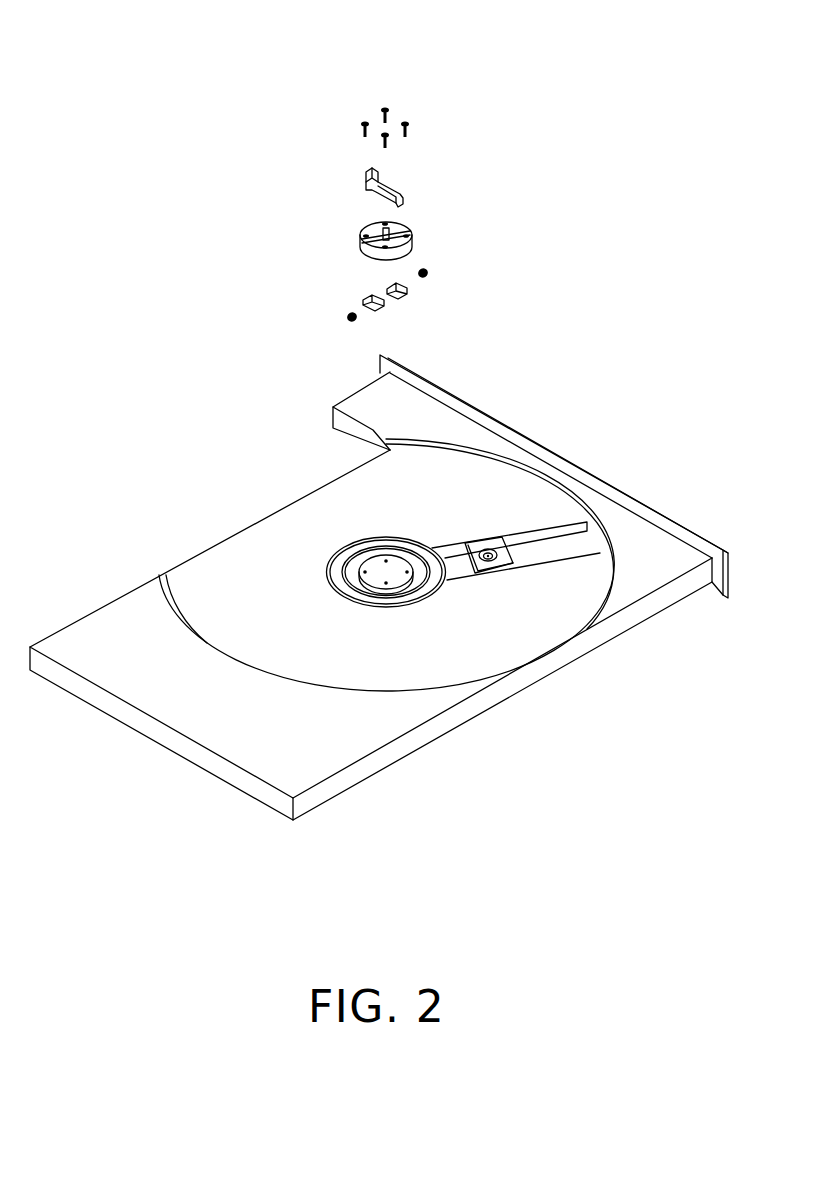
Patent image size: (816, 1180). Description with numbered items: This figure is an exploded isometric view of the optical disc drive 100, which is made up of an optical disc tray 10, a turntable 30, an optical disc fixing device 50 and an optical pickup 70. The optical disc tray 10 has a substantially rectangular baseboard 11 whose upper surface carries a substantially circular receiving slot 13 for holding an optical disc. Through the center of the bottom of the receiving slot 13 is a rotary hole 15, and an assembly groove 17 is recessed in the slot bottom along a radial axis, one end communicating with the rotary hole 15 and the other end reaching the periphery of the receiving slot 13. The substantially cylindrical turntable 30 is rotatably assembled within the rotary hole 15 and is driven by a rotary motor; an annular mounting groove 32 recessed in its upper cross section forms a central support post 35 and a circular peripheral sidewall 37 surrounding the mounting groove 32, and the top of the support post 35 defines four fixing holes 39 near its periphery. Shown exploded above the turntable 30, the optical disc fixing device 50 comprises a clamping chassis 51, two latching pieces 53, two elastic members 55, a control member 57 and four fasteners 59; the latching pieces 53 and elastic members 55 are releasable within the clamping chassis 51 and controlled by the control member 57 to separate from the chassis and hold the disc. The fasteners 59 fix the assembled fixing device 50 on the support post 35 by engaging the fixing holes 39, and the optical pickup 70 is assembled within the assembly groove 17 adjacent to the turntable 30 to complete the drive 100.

The optical disc drive 100 is at (289, 62).
The optical disc tray 10 is at (444, 860).
The baseboard 11 is at (382, 752).
The circular receiving slot 13 is at (428, 667).
The rotary hole 15 is at (445, 581).
The assembly groove 17 is at (568, 540).
The turntable 30 is at (256, 403).
The annular mounting groove 32 is at (352, 580).
The support post 35 is at (373, 569).
The circular peripheral sidewall 37 is at (333, 572).
The fixing holes 39 is at (385, 557).
The optical disc fixing device 50 is at (150, 138).
The clamping chassis 51 is at (363, 237).
The latching pieces 53 is at (367, 297).
The elastic members 55 is at (347, 317).
The control member 57 is at (363, 181).
The fasteners 59 is at (360, 130).
The optical pickup 70 is at (492, 545).